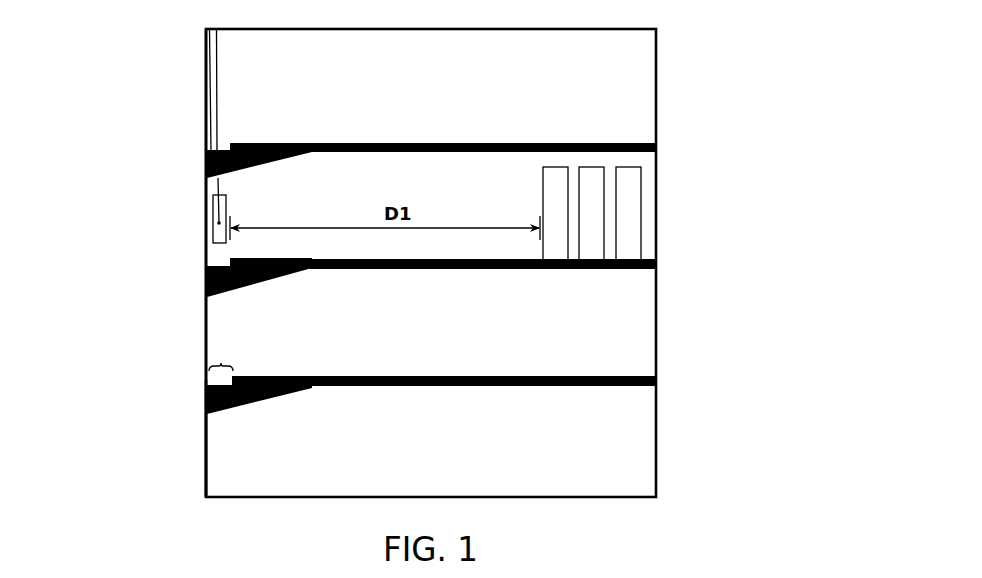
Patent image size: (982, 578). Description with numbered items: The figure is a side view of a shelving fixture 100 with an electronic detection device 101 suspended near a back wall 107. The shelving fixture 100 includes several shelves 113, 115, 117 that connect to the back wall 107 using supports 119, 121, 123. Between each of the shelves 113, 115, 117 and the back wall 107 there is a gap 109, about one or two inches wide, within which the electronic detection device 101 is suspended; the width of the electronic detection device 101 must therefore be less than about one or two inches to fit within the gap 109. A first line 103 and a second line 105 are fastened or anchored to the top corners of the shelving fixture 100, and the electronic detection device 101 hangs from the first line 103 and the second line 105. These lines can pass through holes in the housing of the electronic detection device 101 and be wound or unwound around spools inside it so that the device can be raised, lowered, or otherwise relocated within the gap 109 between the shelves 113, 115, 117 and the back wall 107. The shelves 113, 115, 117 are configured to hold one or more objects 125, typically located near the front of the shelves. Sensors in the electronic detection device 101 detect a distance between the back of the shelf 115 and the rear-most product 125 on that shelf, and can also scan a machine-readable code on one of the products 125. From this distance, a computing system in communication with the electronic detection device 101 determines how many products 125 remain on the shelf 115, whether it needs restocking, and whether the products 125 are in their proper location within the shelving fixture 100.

The shelving fixture 100 is at (822, 148).
The electronic detection device 101 is at (207, 224).
The first line 103 is at (207, 112).
The second line 105 is at (218, 51).
The back wall 107 is at (207, 424).
The gap 109 is at (246, 360).
The shelf 113 is at (657, 147).
The shelf 115 is at (657, 264).
The shelf 117 is at (657, 381).
The support 119 is at (290, 158).
The support 121 is at (270, 281).
The support 123 is at (280, 398).
The objects 125 is at (628, 167).